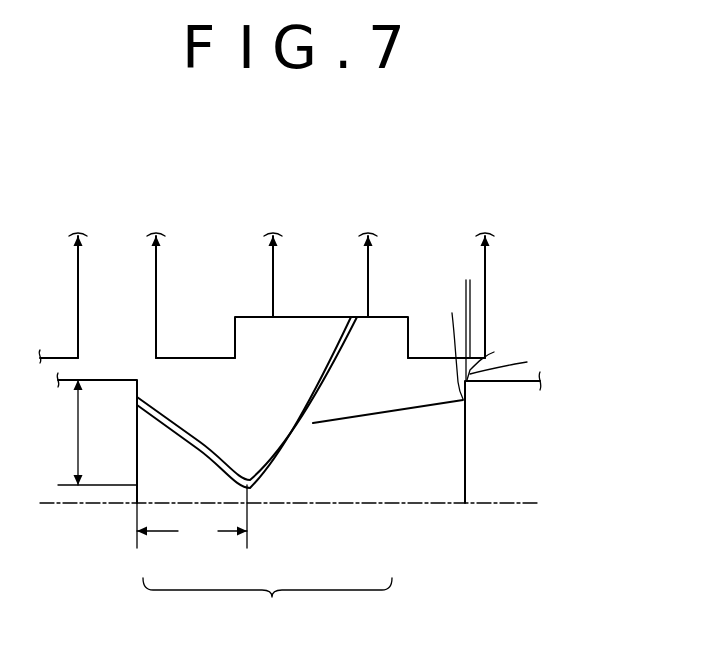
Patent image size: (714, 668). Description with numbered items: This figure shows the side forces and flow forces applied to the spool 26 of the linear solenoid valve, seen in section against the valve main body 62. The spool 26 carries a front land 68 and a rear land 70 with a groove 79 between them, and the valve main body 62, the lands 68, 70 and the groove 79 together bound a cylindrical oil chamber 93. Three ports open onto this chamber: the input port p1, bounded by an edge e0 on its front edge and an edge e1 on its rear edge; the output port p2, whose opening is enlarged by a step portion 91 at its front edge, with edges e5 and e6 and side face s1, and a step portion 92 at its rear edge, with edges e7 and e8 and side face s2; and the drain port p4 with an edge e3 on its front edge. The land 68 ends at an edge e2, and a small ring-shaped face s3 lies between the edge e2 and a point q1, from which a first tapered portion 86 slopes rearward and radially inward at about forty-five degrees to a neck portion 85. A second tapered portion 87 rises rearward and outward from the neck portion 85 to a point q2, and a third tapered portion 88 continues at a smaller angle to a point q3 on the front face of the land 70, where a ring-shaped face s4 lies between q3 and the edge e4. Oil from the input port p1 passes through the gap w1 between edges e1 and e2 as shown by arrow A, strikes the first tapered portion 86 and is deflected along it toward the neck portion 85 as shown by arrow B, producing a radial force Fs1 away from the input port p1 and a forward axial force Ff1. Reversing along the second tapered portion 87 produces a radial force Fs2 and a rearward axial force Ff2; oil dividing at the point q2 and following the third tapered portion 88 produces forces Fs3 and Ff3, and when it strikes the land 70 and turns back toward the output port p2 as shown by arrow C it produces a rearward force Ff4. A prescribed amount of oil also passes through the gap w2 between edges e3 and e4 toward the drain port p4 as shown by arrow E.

The valve main body 62 is at (216, 228).
The input port p1 is at (120, 252).
The output port p2 is at (315, 237).
The drain port p4 is at (519, 253).
The step portion 91 is at (255, 337).
The step portion 92 is at (389, 332).
The cylindrical oil chamber 93 is at (271, 451).
The land 70 is at (510, 472).
The land 68 is at (74, 496).
The spool 26 is at (425, 515).
The groove 79 is at (294, 636).
The first tapered portion 86 is at (192, 443).
The neck portion 85 is at (251, 488).
The second tapered portion 87 is at (287, 459).
The third tapered portion 88 is at (385, 412).
The edge e0 is at (72, 356).
The edge e1 is at (157, 360).
The edge e2 is at (135, 380).
The edge e3 is at (494, 352).
The edge e4 is at (469, 316).
The edge e5 is at (235, 360).
The edge e6 is at (276, 318).
The edge e7 is at (358, 316).
The edge e8 is at (420, 360).
The gap w1 is at (156, 360).
The gap w2 is at (516, 357).
The side face s1 is at (274, 281).
The side face s2 is at (368, 259).
The ring-shaped face s3 is at (137, 393).
The ring-shaped face s4 is at (446, 343).
The point q1 is at (140, 400).
The point q2 is at (313, 423).
The point q3 is at (463, 398).
The arrow A is at (156, 398).
The arrow B is at (361, 323).
The arrow C is at (363, 337).
The arrow E is at (506, 350).
The force Ff1 is at (153, 428).
The force Ff2 is at (307, 448).
The force Ff3 is at (450, 412).
The force Ff4 is at (468, 387).
The force Fs1 is at (157, 437).
The force Fs2 is at (302, 453).
The force Fs3 is at (412, 410).